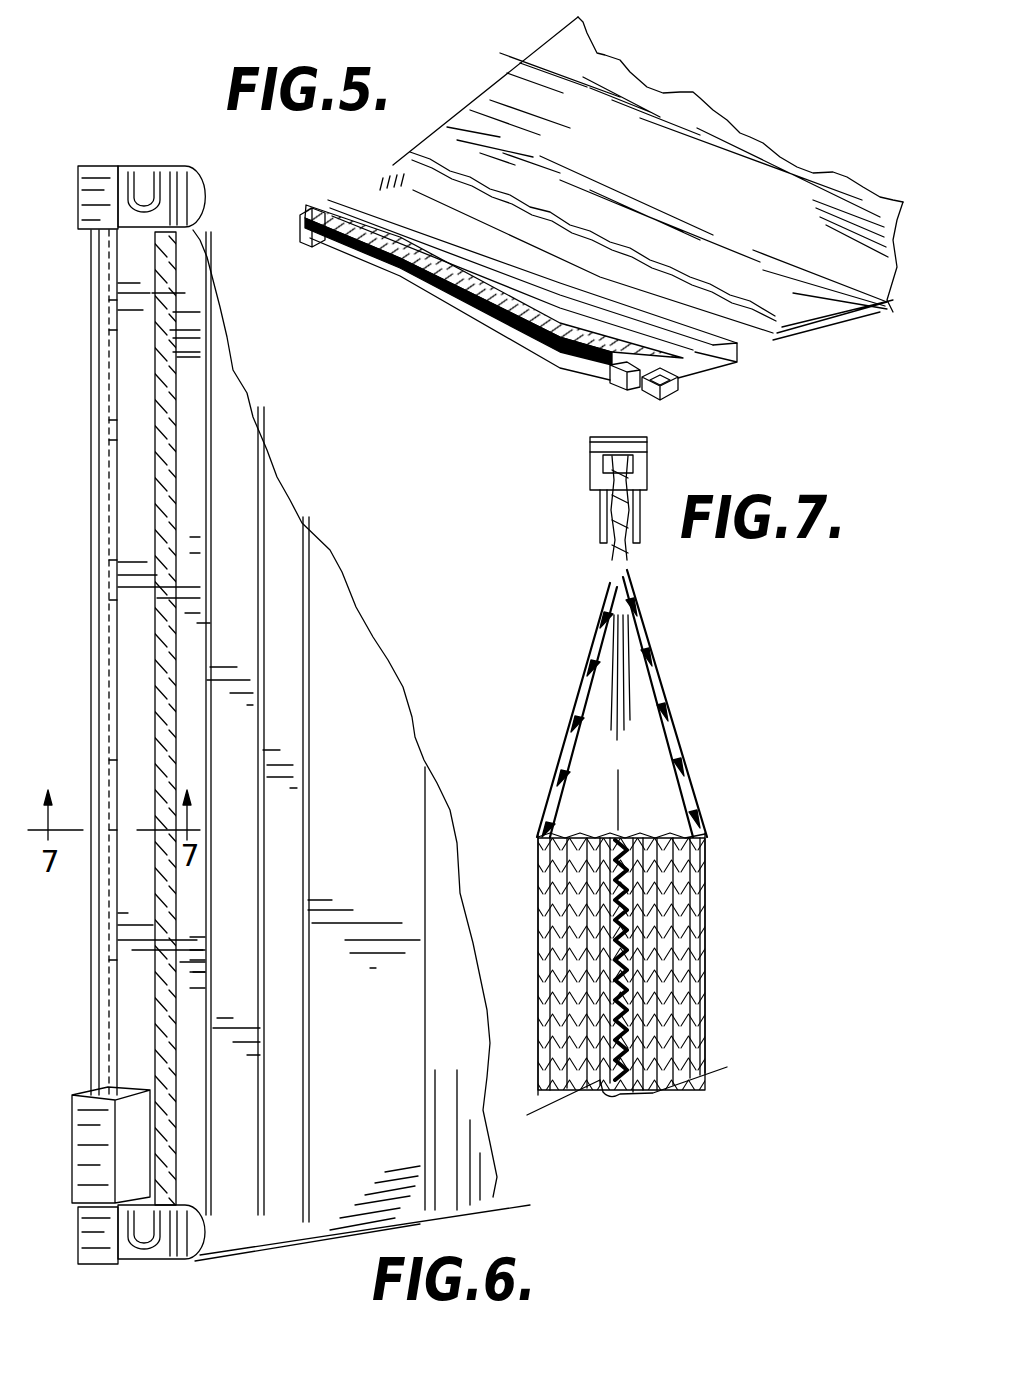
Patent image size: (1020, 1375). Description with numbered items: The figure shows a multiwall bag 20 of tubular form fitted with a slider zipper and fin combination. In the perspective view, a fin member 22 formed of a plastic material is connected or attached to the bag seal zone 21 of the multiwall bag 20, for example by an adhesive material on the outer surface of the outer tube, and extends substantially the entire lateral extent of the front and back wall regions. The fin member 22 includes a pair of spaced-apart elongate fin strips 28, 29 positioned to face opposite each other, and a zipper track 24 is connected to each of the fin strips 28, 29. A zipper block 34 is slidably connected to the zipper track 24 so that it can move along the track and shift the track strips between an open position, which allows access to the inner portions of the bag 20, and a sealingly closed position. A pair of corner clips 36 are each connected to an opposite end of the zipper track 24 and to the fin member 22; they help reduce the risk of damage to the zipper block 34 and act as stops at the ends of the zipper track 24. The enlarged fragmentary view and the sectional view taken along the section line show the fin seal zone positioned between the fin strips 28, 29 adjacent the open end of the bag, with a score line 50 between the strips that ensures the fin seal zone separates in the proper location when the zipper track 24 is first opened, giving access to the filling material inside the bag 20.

In FIG. 5, the multiwall bag 20 is at (737, 100).
In FIG. 6, the multiwall bag 20 is at (530, 1172).
In FIG. 7, the multiwall bag 20 is at (716, 975).
In FIG. 5, the bag seal zone 21 is at (548, 202).
In FIG. 6, the bag seal zone 21 is at (370, 1087).
In FIG. 7, the bag seal zone 21 is at (628, 830).
In FIG. 5, the fin member 22 is at (737, 358).
In FIG. 6, the fin member 22 is at (277, 1235).
In FIG. 5, the zipper track 24 is at (477, 305).
In FIG. 6, the zipper track 24 is at (90, 668).
In FIG. 7, the elongate fin strip 28 is at (635, 603).
In FIG. 7, the elongate fin strip 29 is at (582, 678).
In FIG. 5, the zipper block 34 is at (620, 380).
In FIG. 6, the zipper block 34 is at (90, 1118).
In FIG. 5, the corner clip 36 is at (670, 382).
In FIG. 6, the corner clip 36 is at (106, 175).
In FIG. 5, the score line 50 is at (425, 252).
In FIG. 6, the score line 50 is at (185, 718).
In FIG. 7, the score line 50 is at (600, 576).